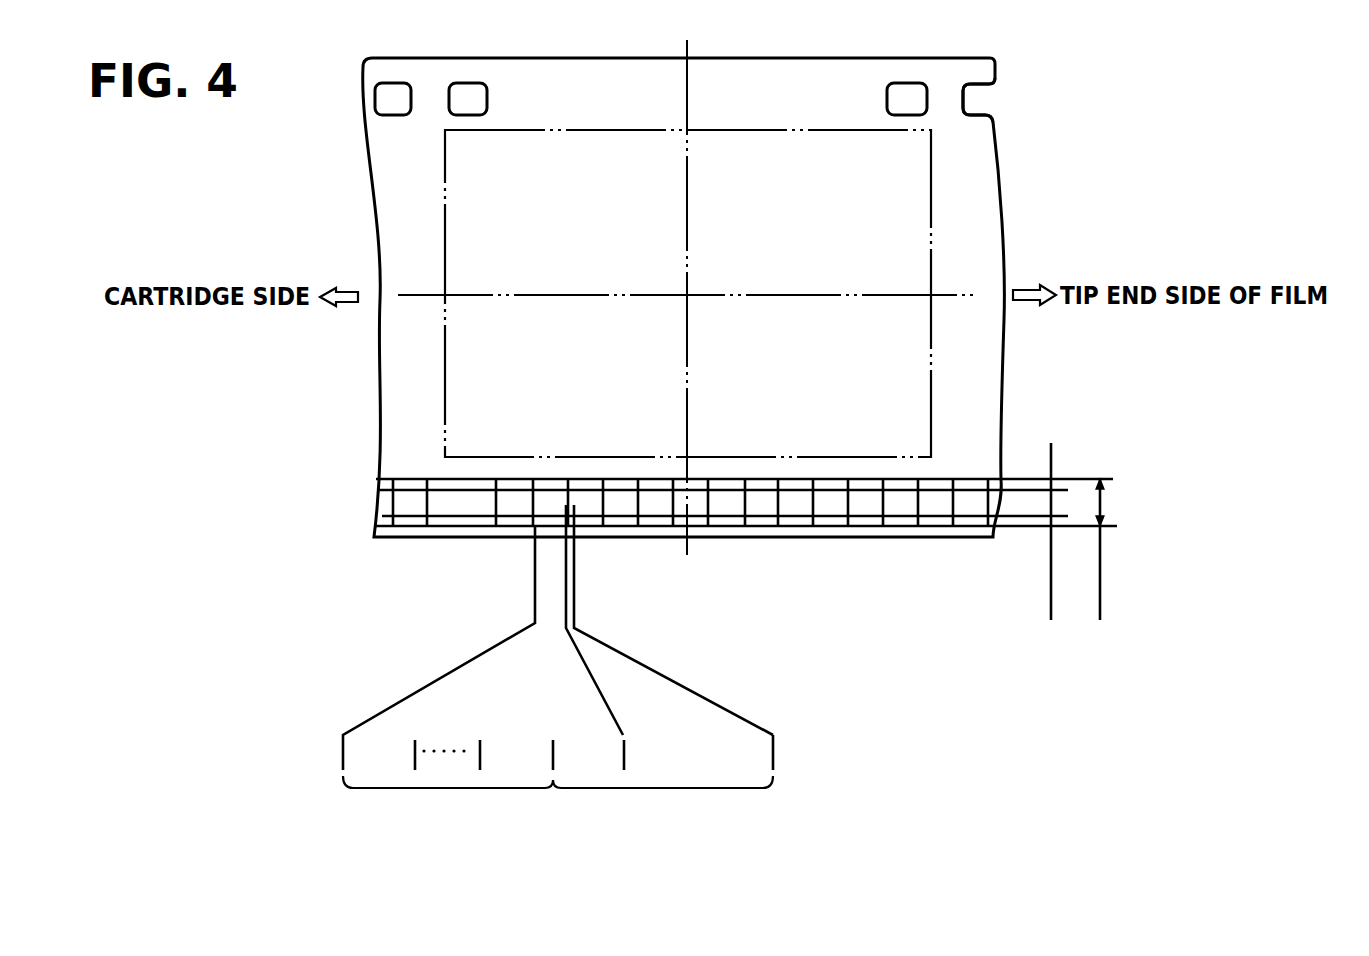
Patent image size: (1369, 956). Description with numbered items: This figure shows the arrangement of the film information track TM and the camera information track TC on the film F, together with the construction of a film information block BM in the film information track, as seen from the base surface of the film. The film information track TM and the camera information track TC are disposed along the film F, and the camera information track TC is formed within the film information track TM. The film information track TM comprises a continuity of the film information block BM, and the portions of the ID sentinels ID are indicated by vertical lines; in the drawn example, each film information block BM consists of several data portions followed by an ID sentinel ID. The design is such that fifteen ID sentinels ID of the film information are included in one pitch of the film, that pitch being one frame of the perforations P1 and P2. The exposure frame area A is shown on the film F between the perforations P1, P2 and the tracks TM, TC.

The film F is at (780, 58).
The perforation P1 is at (396, 83).
The perforation P2 is at (470, 83).
The exposure frame area A is at (832, 131).
The ID sentinel ID is at (575, 505).
The camera information track TC is at (1032, 531).
The film information track TM is at (1083, 549).
The film information block BM is at (558, 692).